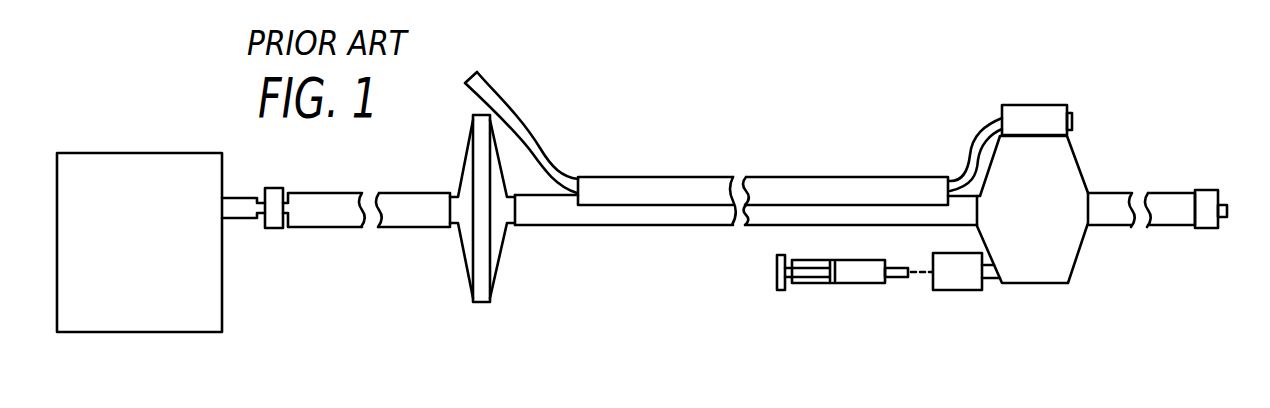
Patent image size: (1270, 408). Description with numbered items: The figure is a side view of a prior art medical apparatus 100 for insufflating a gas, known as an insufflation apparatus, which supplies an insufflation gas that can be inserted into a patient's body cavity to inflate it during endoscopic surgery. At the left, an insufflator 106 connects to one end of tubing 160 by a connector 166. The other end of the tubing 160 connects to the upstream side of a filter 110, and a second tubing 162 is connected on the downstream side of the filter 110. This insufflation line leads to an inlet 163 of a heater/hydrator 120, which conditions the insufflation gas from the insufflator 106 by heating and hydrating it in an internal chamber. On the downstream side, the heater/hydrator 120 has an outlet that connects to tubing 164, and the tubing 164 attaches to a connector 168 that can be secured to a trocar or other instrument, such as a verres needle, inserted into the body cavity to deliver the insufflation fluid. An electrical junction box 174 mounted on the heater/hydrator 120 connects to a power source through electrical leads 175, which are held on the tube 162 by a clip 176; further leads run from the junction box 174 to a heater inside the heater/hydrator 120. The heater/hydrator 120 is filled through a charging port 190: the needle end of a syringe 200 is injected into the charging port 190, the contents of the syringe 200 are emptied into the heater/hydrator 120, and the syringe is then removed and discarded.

The medical apparatus 100 is at (657, 112).
The insufflator 106 is at (107, 334).
The filter 110 is at (479, 302).
The heater/hydrator 120 is at (1037, 286).
The tubing 160 is at (403, 228).
The second tubing 162 is at (610, 228).
The inlet 163 is at (988, 215).
The tubing 164 is at (1115, 226).
The connector 166 is at (274, 229).
The connector 168 is at (1203, 230).
The electrical junction box 174 is at (1038, 105).
The electrical leads 175 is at (535, 152).
The clip 176 is at (777, 177).
The charging port 190 is at (935, 290).
The syringe 200 is at (860, 275).